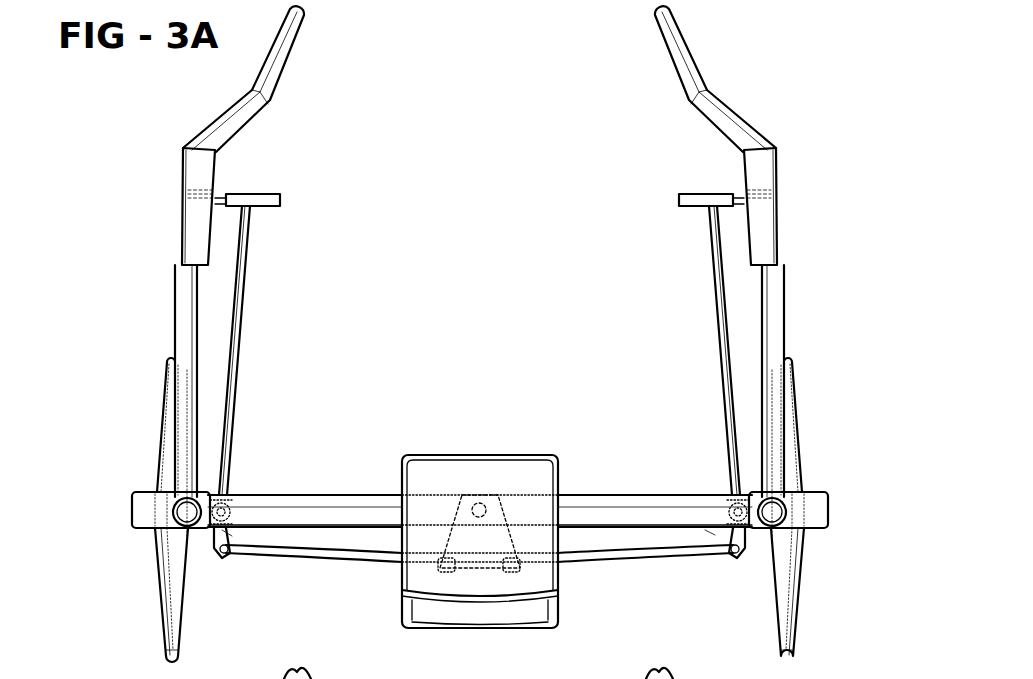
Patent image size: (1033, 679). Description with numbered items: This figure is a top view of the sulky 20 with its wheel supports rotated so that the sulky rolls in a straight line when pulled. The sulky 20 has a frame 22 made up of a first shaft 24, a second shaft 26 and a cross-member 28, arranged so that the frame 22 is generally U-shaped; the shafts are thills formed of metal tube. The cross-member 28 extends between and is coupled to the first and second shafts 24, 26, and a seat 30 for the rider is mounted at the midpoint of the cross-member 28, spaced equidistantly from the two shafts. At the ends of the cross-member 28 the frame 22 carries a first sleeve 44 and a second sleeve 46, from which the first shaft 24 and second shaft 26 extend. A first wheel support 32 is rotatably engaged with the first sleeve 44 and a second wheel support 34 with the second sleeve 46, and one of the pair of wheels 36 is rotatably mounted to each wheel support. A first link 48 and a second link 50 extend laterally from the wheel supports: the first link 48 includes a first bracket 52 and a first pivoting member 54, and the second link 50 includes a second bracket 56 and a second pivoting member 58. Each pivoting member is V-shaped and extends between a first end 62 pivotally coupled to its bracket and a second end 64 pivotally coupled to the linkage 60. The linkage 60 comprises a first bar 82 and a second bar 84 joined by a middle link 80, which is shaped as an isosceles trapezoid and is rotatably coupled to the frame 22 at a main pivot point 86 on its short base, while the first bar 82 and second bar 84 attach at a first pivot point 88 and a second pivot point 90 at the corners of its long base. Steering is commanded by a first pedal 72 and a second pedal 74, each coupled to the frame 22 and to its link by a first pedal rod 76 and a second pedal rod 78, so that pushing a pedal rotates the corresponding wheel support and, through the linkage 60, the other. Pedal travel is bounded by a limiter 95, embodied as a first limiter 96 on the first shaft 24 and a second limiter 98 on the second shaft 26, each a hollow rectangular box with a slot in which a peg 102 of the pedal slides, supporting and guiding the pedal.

The sulky 20 is at (815, 108).
The frame 22 is at (677, 50).
The first shaft 24 is at (282, 50).
The second shaft 26 is at (735, 125).
The cross-member 28 is at (340, 497).
The seat 30 is at (480, 522).
The first wheel support 32 is at (140, 505).
The second wheel support 34 is at (818, 517).
The wheels 36 is at (170, 653).
The first sleeve 44 is at (180, 510).
The second sleeve 46 is at (778, 510).
The first link 48 is at (205, 545).
The second link 50 is at (753, 545).
The first bracket 52 is at (212, 495).
The first pivoting member 54 is at (223, 533).
The second bracket 56 is at (755, 495).
The second pivoting member 58 is at (710, 530).
The linkage 60 is at (479, 551).
The first end 62 is at (227, 505).
The second end 64 is at (226, 556).
The first pedal 72 is at (278, 198).
The second pedal 74 is at (685, 197).
The first pedal rod 76 is at (237, 342).
The second pedal rod 78 is at (720, 335).
The middle link 80 is at (462, 505).
The first bar 82 is at (308, 555).
The second bar 84 is at (622, 557).
The main pivot point 86 is at (480, 497).
The first pivot point 88 is at (442, 573).
The second pivot point 90 is at (508, 572).
The limiter 95 is at (197, 165).
The first limiter 96 is at (197, 233).
The second limiter 98 is at (763, 222).
The peg 102 is at (216, 199).